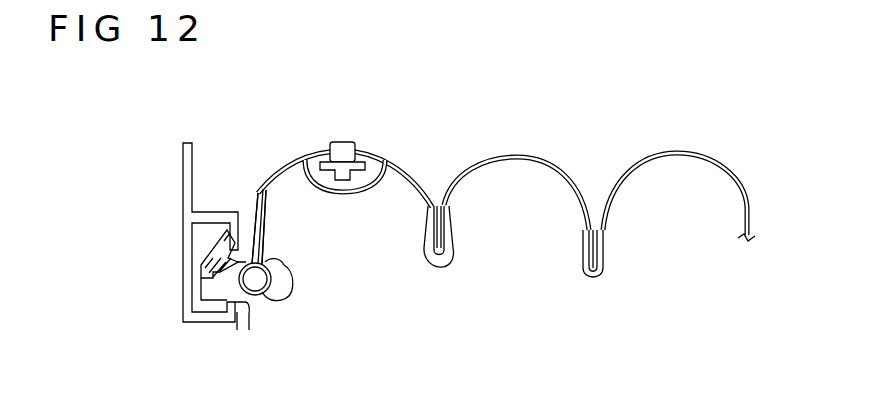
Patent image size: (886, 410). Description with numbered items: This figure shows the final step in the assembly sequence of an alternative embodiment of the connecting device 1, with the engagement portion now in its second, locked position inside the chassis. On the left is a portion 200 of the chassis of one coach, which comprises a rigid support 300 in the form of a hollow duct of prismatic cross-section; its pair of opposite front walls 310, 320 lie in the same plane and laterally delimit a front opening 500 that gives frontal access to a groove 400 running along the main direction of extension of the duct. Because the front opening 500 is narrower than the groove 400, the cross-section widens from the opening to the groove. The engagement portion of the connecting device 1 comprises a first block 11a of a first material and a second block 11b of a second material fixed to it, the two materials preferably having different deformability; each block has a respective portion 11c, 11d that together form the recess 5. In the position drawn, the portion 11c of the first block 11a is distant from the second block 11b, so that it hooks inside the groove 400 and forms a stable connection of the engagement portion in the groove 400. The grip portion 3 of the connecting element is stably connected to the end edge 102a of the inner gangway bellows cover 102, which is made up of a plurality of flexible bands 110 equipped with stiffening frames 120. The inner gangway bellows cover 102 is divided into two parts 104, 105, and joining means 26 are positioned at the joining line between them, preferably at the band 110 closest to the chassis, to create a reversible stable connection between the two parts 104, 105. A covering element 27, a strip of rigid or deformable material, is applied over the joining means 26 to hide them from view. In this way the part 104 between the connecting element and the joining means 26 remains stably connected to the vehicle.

The connecting device 1 is at (304, 305).
The grip portion 3 is at (270, 256).
The recess 5 is at (252, 304).
The first block 11a is at (202, 262).
The second block 11b is at (218, 287).
The portion of the first block 11c is at (233, 230).
The portion of the second block 11d is at (226, 323).
The joining means 26 is at (356, 132).
The covering element 27 is at (362, 190).
The inner gangway bellows cover 102 is at (657, 148).
The end edge of the inner gangway bellows cover 102a is at (304, 160).
The first part of the inner gangway bellows cover 104 is at (273, 190).
The second part of the inner gangway bellows cover 105 is at (426, 190).
The band 110 is at (397, 160).
The stiffening frame 120 is at (448, 268).
The portion of the chassis 200 is at (176, 151).
The rigid support 300 is at (178, 294).
The first front wall 310 is at (240, 210).
The second front wall 320 is at (236, 312).
The groove 400 is at (190, 238).
The front opening 500 is at (244, 251).